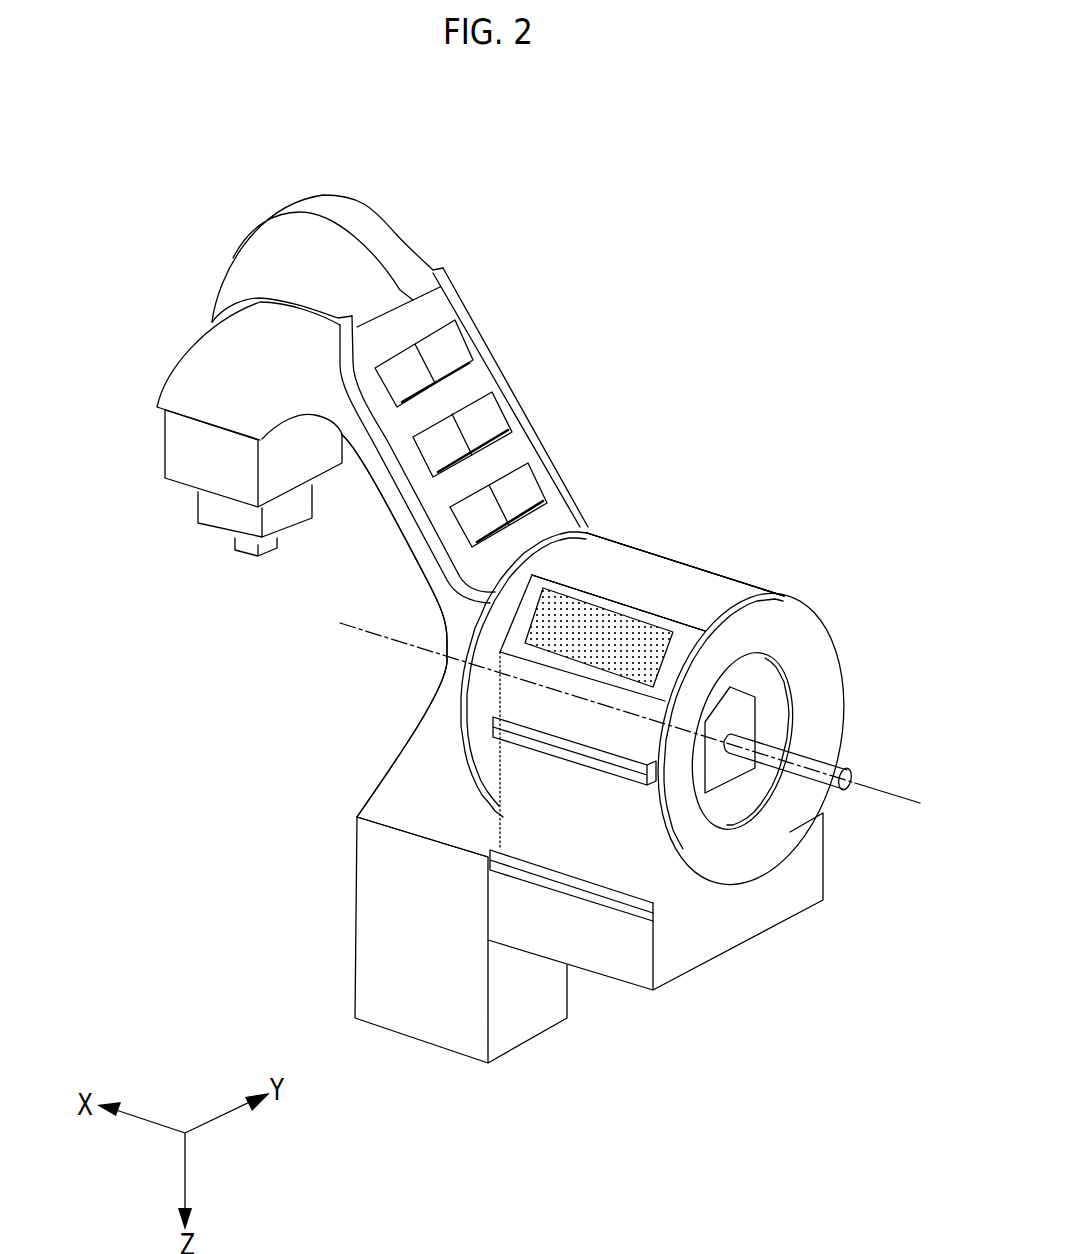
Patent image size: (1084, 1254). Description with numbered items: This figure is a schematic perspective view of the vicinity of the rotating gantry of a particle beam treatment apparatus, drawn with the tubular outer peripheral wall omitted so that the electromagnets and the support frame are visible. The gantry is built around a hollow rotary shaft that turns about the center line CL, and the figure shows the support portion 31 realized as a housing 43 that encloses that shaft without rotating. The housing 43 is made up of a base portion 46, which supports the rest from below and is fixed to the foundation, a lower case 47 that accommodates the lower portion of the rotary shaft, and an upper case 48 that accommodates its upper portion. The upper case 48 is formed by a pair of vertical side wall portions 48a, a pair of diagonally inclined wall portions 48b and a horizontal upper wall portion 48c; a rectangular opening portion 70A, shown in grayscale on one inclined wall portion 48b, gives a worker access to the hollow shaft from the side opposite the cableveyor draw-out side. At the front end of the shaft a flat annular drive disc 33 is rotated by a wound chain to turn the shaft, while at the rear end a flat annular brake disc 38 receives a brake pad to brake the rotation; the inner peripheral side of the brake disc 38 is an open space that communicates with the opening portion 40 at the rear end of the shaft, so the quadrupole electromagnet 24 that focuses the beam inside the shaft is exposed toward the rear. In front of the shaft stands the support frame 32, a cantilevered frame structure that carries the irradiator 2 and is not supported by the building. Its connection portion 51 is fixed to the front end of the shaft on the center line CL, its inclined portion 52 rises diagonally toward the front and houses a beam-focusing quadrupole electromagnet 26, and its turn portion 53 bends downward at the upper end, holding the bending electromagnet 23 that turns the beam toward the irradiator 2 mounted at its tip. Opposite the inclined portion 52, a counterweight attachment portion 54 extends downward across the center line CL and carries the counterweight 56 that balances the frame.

The irradiator 2 is at (158, 446).
The bending electromagnet 23 is at (327, 240).
The quadrupole electromagnet 26 is at (530, 495).
The inclined portion 52 is at (397, 510).
The turn portion 53 is at (192, 360).
The drive disc 33 is at (560, 547).
The housing 43 is at (686, 560).
The support portion 31 is at (685, 564).
The upper case 48 is at (760, 585).
The side wall portions 48a is at (557, 714).
The inclined wall portions 48b is at (668, 557).
The upper wall portion 48c is at (708, 592).
The brake disc 38 is at (810, 622).
The quadrupole electromagnet 24 is at (752, 713).
The opening portion 40 is at (790, 740).
The center line CL is at (380, 637).
The connection portion 51 is at (457, 672).
The support frame 32 is at (386, 756).
The counterweight attachment portion 54 is at (410, 817).
The counterweight 56 is at (398, 938).
The opening portion 70A is at (597, 668).
The lower case 47 is at (598, 858).
The base portion 46 is at (738, 934).